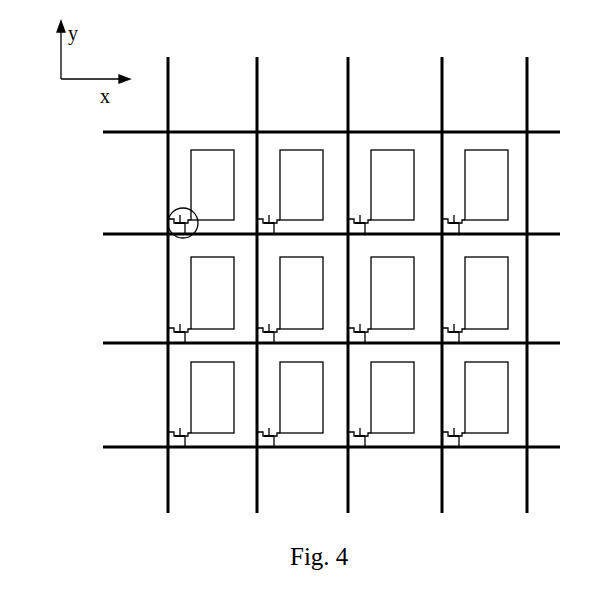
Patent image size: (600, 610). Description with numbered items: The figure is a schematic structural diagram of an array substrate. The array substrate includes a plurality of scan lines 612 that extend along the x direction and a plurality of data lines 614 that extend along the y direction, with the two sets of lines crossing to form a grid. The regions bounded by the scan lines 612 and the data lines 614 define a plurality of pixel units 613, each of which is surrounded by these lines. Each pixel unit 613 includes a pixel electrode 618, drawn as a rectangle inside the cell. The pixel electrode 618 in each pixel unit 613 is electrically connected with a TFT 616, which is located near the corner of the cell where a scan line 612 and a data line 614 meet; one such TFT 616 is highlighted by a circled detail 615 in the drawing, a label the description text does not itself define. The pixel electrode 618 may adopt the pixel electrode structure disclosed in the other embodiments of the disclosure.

The scan line 612 is at (308, 134).
The pixel unit 613 is at (180, 293).
The data line 614 is at (168, 271).
The thin film transistor 615 is at (174, 211).
The TFT 616 is at (167, 227).
The pixel electrode 618 is at (217, 148).